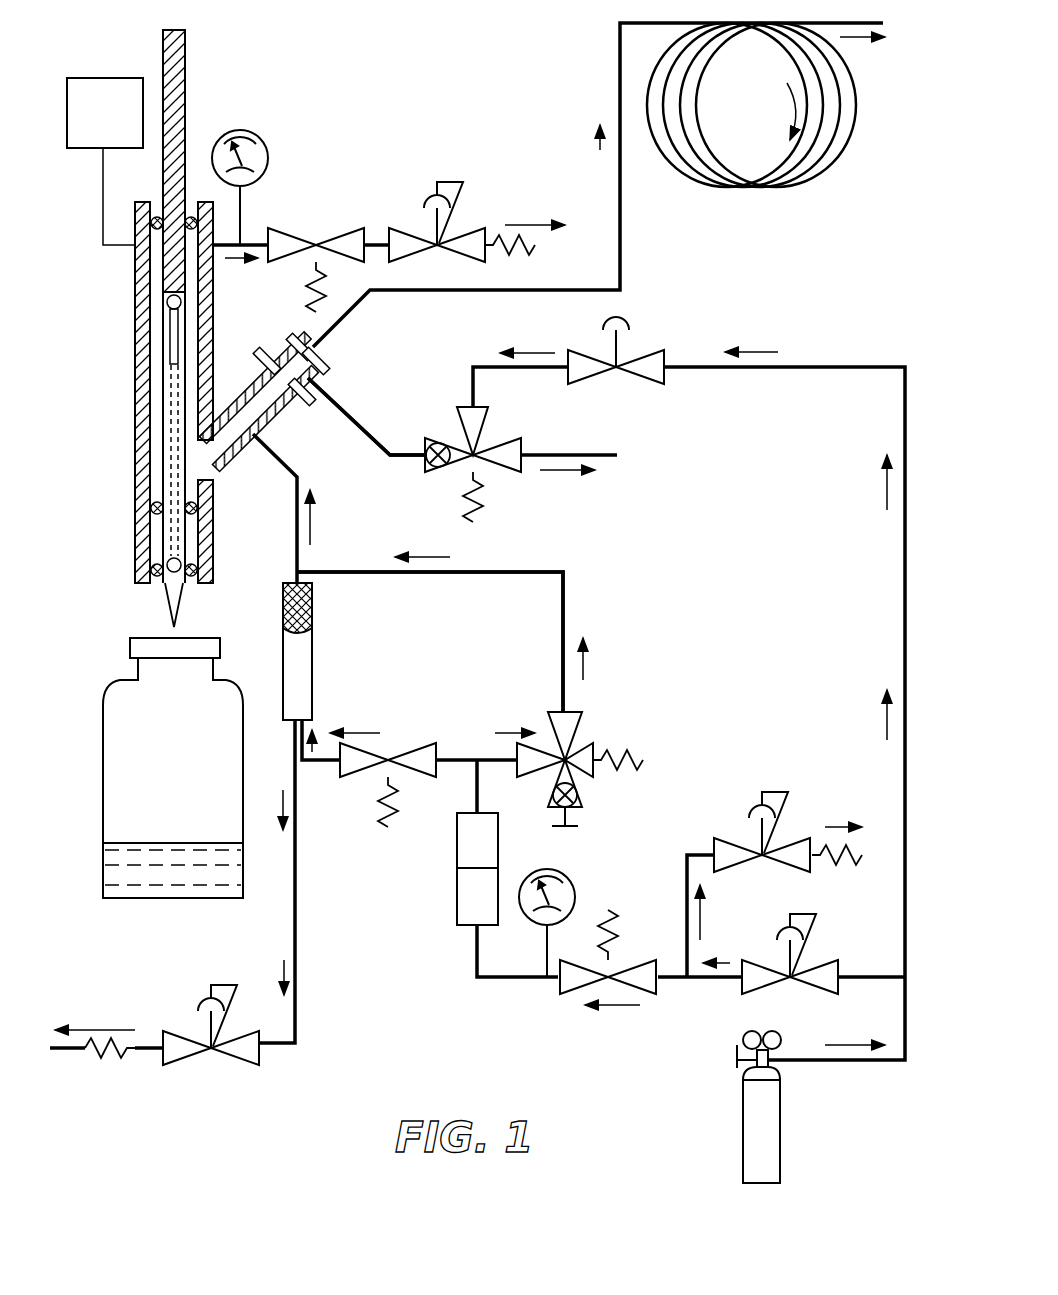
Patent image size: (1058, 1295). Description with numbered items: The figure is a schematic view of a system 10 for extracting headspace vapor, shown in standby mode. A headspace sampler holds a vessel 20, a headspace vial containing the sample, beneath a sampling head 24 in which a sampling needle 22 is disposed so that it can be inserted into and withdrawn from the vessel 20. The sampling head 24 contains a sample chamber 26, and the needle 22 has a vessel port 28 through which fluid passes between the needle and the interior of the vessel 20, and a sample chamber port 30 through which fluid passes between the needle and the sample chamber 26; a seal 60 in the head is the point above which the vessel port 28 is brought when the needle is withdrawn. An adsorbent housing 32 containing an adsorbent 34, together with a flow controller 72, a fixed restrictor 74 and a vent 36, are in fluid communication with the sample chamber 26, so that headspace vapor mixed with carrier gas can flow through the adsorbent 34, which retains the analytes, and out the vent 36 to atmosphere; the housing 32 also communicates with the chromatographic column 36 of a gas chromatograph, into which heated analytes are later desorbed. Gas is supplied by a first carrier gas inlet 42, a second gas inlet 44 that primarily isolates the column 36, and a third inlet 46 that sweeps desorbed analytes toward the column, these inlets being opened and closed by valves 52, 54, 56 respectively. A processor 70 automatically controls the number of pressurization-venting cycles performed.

The system 10 is at (378, 135).
The vessel 20 is at (112, 692).
The sampling needle 22 is at (172, 612).
The sampling head 24 is at (138, 408).
The sample chamber 26 is at (152, 278).
The vessel port 28 is at (166, 565).
The sample chamber port 30 is at (167, 304).
The adsorbent housing 32 is at (312, 680).
The adsorbent 34 is at (312, 613).
The vent / chromatographic column 36 is at (735, 188).
The first carrier gas inlet 42 is at (566, 595).
The second gas inlet 44 is at (362, 422).
The third inlet 46 is at (322, 765).
The valve 52 is at (578, 728).
The valve 54 is at (438, 467).
The valve 56 is at (362, 771).
The seal 60 is at (196, 582).
The processor 70 is at (120, 78).
The flow controller 72 is at (228, 1062).
The fixed restrictor 74 is at (118, 1055).